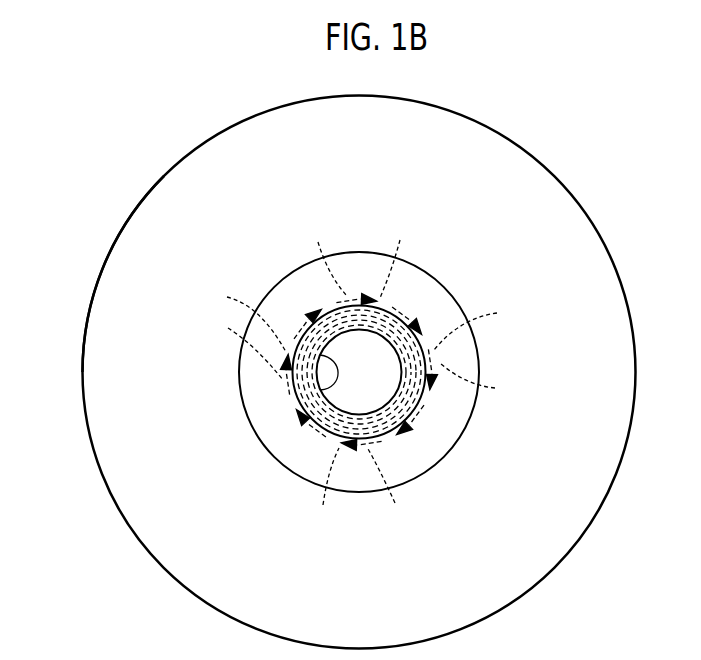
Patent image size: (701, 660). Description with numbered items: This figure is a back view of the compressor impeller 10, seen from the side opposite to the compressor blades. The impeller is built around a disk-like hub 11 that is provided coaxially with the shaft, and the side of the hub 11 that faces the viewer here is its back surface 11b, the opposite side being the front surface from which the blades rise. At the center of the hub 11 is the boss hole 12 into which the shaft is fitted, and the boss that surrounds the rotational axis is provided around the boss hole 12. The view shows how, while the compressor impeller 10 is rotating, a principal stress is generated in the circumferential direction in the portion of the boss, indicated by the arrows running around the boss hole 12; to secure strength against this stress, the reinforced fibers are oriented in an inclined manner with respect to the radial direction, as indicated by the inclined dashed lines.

The compressor impeller 10 is at (339, 362).
The hub 11 is at (342, 372).
The back surface 11b is at (142, 230).
The boss hole 12 is at (318, 392).